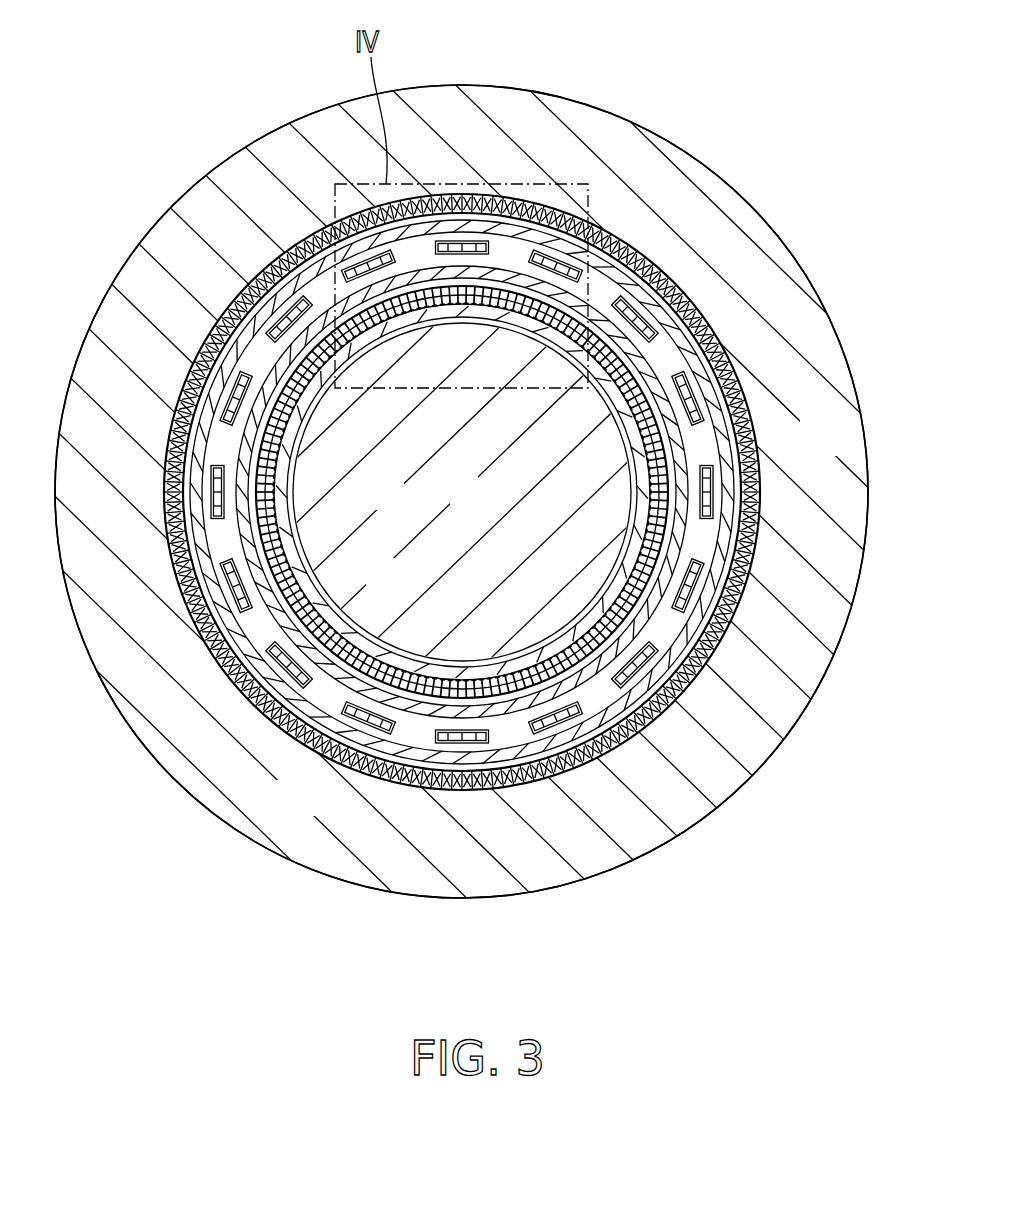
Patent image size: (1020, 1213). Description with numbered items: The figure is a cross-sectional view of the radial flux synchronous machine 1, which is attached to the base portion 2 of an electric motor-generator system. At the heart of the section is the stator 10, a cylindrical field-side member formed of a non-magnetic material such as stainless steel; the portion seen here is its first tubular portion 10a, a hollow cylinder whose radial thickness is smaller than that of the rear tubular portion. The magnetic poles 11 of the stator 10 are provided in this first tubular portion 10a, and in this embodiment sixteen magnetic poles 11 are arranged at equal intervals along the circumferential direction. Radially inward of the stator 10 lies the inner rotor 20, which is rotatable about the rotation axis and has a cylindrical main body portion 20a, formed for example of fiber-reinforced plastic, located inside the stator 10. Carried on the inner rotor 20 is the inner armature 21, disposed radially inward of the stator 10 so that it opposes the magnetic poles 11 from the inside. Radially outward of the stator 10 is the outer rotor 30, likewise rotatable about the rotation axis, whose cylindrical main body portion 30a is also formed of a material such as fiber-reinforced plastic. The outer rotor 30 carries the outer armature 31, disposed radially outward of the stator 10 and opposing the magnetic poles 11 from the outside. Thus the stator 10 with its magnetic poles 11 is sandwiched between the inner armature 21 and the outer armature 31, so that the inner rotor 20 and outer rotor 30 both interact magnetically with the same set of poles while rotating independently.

The radial flux synchronous machine 1 is at (768, 126).
The base portion 2 is at (474, 512).
The stator 10 is at (520, 758).
The first tubular portion 10a is at (430, 514).
The magnetic pole 11 is at (700, 408).
The inner rotor 20 is at (286, 493).
The main body portion 20a is at (326, 612).
The inner armature 21 is at (347, 664).
The outer rotor 30 is at (601, 109).
The main body portion 30a is at (509, 112).
The outer armature 31 is at (686, 290).